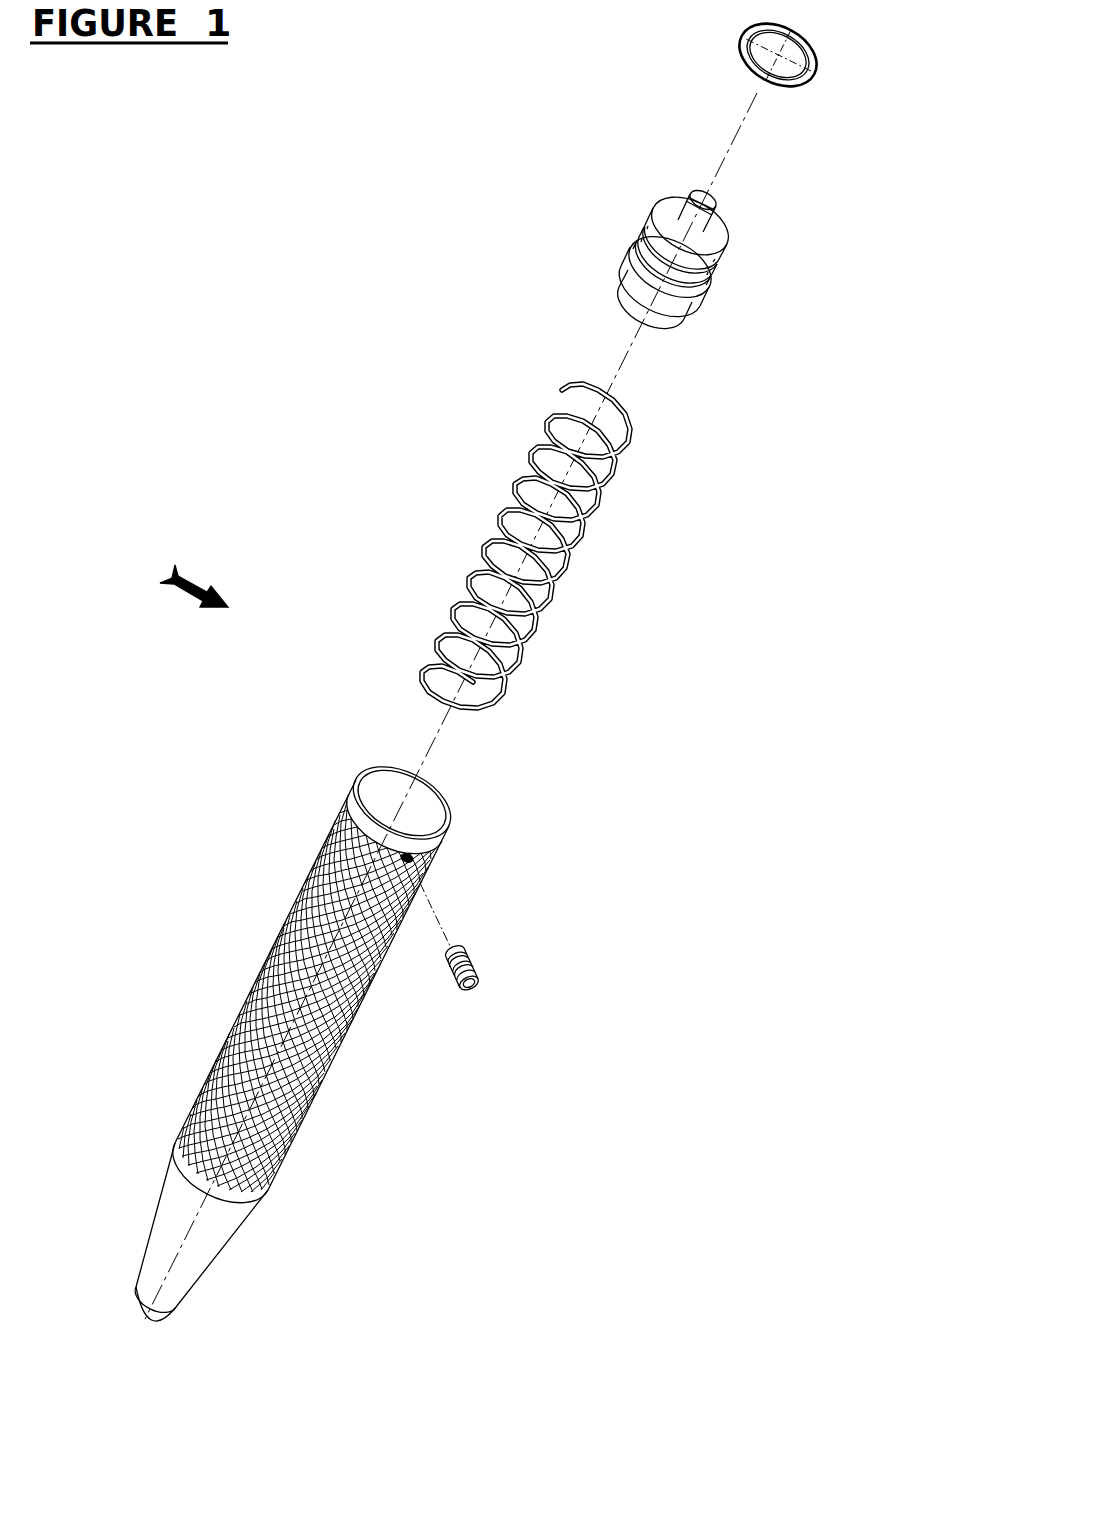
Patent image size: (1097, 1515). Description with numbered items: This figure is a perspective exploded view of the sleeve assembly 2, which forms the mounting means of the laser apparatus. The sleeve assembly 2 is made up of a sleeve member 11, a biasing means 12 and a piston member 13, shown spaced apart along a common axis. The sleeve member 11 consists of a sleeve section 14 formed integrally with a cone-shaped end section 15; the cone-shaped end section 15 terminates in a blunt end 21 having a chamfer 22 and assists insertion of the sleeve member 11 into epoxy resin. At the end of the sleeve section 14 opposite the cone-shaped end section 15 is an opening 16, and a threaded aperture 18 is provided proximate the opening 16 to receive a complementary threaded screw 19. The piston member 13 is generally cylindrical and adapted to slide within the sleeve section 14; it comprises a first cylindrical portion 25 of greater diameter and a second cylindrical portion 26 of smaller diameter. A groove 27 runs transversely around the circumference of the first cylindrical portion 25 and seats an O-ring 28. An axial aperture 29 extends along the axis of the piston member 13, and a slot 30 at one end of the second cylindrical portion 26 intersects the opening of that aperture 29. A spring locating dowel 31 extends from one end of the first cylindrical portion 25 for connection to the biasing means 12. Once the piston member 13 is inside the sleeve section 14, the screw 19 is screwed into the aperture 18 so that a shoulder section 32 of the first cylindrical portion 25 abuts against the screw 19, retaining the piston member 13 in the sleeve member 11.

The sleeve assembly 2 is at (167, 562).
The sleeve member 11 is at (301, 1046).
The biasing means 12 is at (491, 521).
The piston member 13 is at (634, 297).
The sleeve section 14 is at (203, 1113).
The cone-shaped end section 15 is at (222, 1263).
The opening 16 is at (371, 771).
The threaded aperture 18 is at (420, 857).
The threaded screw 19 is at (473, 955).
The blunt end 21 is at (143, 1322).
The chamfer 22 is at (178, 1323).
The first cylindrical portion 25 is at (651, 285).
The second cylindrical portion 26 is at (718, 240).
The groove 27 is at (696, 285).
The O-ring 28 is at (818, 74).
The axial aperture 29 is at (694, 188).
The slot 30 is at (729, 191).
The spring locating dowel 31 is at (668, 337).
The shoulder section 32 is at (731, 217).